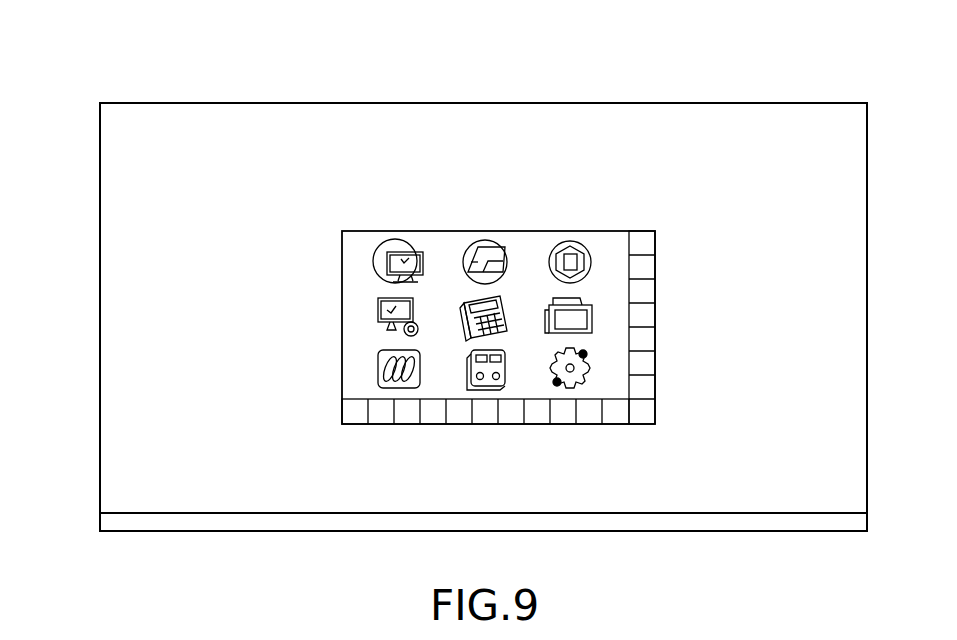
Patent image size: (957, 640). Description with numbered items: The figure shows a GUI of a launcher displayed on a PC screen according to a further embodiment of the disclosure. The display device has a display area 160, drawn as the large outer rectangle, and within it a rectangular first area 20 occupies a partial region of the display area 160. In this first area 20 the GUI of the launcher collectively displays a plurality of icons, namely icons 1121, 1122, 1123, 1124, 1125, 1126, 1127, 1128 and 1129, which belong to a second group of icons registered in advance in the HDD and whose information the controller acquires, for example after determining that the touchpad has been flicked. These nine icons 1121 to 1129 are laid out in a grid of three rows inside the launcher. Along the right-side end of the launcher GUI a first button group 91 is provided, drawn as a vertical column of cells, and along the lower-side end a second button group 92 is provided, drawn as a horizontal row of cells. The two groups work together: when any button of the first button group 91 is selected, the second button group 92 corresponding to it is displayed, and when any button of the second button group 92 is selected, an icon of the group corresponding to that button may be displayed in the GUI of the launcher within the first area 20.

The display area 160 is at (756, 103).
The first area 20 is at (358, 231).
The first button group 91 is at (641, 216).
The second button group 92 is at (327, 408).
The icon 1121 is at (393, 240).
The icon 1122 is at (483, 240).
The icon 1123 is at (570, 241).
The icon 1124 is at (414, 322).
The icon 1125 is at (505, 318).
The icon 1126 is at (594, 318).
The icon 1127 is at (400, 388).
The icon 1128 is at (486, 388).
The icon 1129 is at (588, 388).